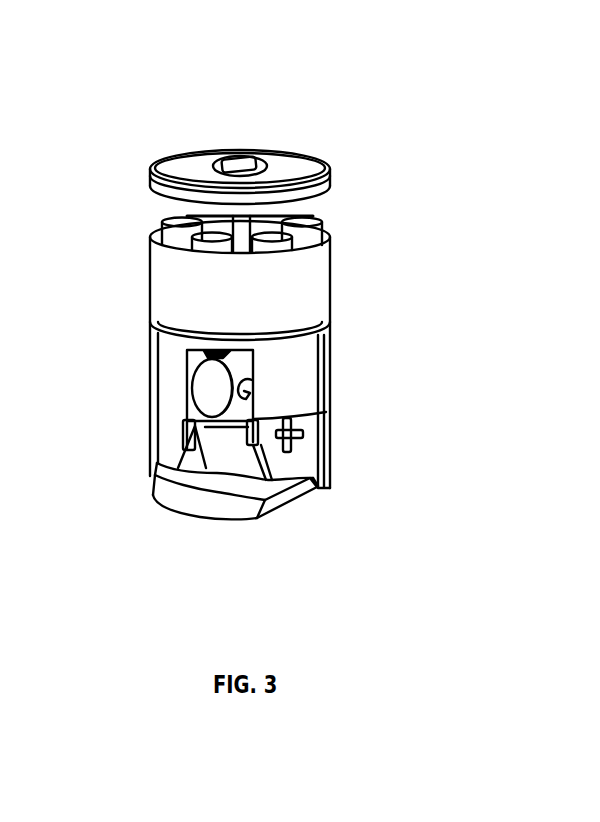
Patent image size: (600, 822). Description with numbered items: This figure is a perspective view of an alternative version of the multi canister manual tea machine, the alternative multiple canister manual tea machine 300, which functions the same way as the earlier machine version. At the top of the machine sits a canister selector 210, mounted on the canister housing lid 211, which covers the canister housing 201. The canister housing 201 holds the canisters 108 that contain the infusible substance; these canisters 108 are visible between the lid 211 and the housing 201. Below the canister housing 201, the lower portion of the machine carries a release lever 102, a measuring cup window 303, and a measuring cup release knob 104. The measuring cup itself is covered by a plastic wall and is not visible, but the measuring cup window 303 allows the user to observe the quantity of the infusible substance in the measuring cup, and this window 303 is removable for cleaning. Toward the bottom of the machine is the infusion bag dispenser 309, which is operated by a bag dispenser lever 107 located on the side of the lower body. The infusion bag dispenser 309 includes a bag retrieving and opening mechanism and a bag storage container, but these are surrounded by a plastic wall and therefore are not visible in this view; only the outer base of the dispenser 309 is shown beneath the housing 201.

The alternative multiple canister manual tea machine 300 is at (119, 141).
The canister selector 210 is at (247, 158).
The canister housing lid 211 is at (328, 188).
The canisters 108 is at (318, 221).
The canister housing 201 is at (313, 295).
The release lever 102 is at (188, 352).
The measuring cup window 303 is at (208, 390).
The measuring cup release knob 104 is at (253, 392).
The bag dispenser lever 107 is at (303, 433).
The infusion bag dispenser 309 is at (223, 448).